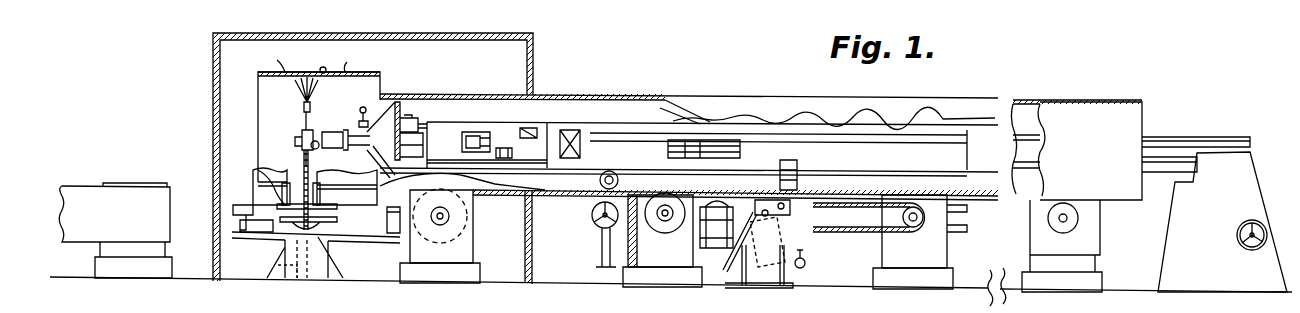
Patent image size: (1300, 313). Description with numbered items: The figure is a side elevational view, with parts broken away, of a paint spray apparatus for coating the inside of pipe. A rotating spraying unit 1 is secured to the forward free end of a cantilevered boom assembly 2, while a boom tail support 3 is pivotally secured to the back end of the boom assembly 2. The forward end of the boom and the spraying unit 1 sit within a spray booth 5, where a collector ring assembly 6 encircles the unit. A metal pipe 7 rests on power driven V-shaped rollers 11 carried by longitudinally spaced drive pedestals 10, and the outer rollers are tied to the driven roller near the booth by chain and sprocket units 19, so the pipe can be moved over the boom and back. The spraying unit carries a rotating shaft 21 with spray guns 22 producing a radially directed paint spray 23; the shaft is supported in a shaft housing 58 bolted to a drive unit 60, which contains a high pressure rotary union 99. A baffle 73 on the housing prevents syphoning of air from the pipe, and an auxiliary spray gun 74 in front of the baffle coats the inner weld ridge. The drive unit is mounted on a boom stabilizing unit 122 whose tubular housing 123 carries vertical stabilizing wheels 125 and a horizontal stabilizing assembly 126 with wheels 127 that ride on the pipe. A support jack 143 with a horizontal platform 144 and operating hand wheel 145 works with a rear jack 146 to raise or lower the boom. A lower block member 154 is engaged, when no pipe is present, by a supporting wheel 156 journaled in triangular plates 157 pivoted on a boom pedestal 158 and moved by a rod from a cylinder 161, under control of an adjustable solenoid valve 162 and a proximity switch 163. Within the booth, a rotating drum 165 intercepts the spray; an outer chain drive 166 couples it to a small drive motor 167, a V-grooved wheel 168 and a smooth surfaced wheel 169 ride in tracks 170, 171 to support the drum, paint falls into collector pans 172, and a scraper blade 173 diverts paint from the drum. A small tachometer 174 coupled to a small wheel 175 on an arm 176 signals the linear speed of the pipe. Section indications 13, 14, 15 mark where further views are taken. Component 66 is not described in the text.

The rotating spraying unit 1 is at (318, 127).
The boom assembly 2 is at (611, 115).
The boom tail support 3 is at (1260, 178).
The spray booth 5 is at (496, 34).
The collector ring assembly 6 is at (376, 72).
The metal pipe 7 is at (927, 106).
The drive pedestals 10 is at (162, 274).
The V-shaped roller 11 is at (127, 185).
The section line 13 is at (603, 56).
The section line 14 is at (683, 76).
The section line 15 is at (748, 80).
The chain and sprocket units 19 is at (867, 210).
The rotating shaft 21 is at (357, 140).
The spray guns 22 is at (298, 125).
The paint spray 23 is at (300, 86).
The shaft housing 58 is at (417, 144).
The drive unit 60 is at (522, 124).
The coupling 66 is at (407, 118).
The baffle 73 is at (394, 100).
The auxiliary spray gun 74 is at (364, 111).
The high pressure rotary union 99 is at (475, 130).
The boom stabilizing unit 122 is at (737, 104).
The tubular housing 123 is at (668, 122).
The wheels 125 is at (600, 180).
The horizontal stabilizing assembly 126 is at (745, 153).
The wheels 127 is at (668, 147).
The support jack 143 is at (602, 248).
The horizontal platform 144 is at (600, 209).
The operating hand wheel 145 is at (592, 222).
The rear jack 146 is at (1243, 228).
The lower block member 154 is at (797, 168).
The supporting wheel 156 is at (796, 198).
The triangular plates 157 is at (756, 282).
The boom pedestal 158 is at (780, 284).
The cylinder 161 is at (964, 165).
The adjustable solenoid valve 162 is at (806, 270).
The proximity switch 163 is at (708, 198).
The rotating drum 165 is at (258, 104).
The outer chain drive 166 is at (323, 244).
The small drive motor 167 is at (280, 270).
The V-grooved wheel 168 is at (263, 176).
The smooth surfaced wheel 169 is at (332, 213).
The track 170 is at (286, 65).
The track 171 is at (345, 70).
The collector pans 172 is at (260, 236).
The scraper blade 173 is at (249, 204).
The small tachometer 174 is at (695, 250).
The small wheel 175 is at (716, 227).
The arm 176 is at (725, 204).